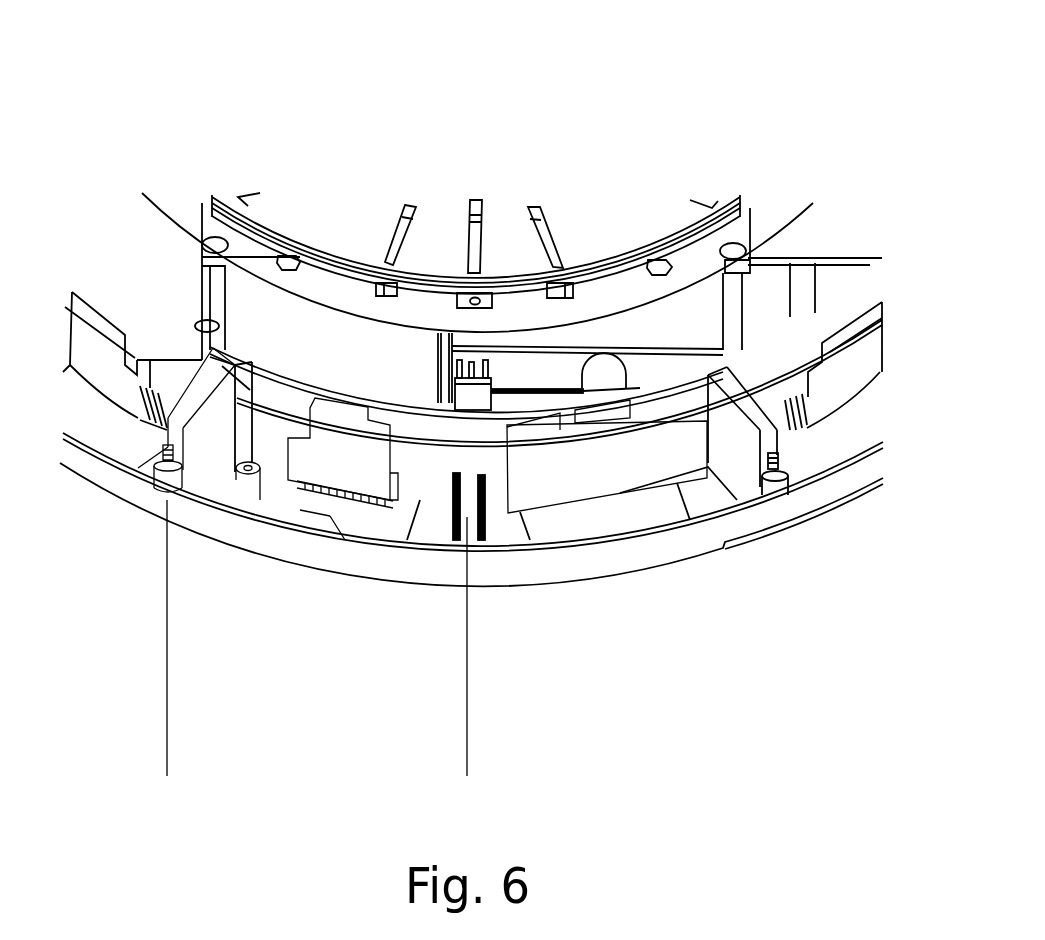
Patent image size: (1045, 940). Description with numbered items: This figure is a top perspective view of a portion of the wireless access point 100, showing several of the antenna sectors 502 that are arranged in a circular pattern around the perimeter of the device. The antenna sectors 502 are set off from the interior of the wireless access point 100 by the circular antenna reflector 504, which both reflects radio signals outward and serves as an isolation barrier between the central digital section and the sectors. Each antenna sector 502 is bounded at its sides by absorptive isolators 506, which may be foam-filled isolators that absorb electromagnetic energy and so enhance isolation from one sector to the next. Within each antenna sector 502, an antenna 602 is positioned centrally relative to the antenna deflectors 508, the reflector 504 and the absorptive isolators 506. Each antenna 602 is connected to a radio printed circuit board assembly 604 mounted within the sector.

The wireless access point 100 is at (725, 135).
The antenna sector 502 is at (465, 766).
The circular antenna reflector 504 is at (253, 487).
The absorptive isolator 506 is at (217, 508).
The antenna deflector 508 is at (323, 522).
The antenna 602 is at (297, 478).
The radio printed circuit board assembly 604 is at (397, 538).